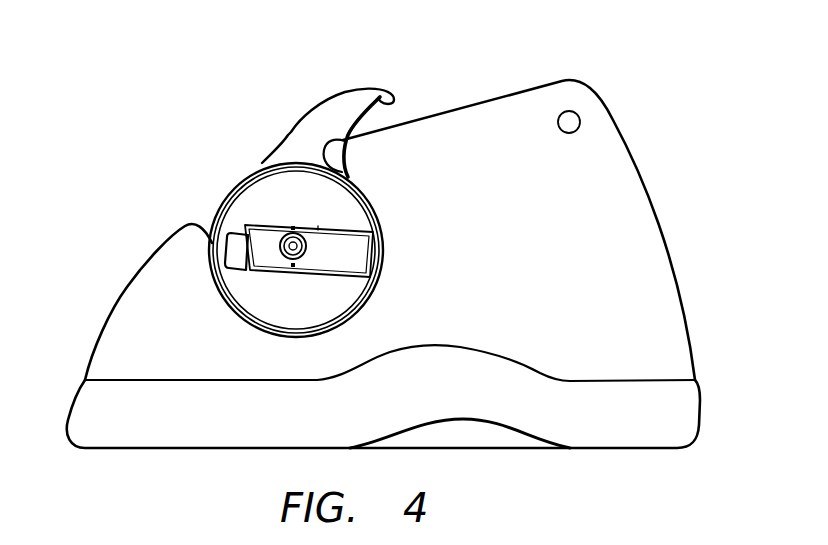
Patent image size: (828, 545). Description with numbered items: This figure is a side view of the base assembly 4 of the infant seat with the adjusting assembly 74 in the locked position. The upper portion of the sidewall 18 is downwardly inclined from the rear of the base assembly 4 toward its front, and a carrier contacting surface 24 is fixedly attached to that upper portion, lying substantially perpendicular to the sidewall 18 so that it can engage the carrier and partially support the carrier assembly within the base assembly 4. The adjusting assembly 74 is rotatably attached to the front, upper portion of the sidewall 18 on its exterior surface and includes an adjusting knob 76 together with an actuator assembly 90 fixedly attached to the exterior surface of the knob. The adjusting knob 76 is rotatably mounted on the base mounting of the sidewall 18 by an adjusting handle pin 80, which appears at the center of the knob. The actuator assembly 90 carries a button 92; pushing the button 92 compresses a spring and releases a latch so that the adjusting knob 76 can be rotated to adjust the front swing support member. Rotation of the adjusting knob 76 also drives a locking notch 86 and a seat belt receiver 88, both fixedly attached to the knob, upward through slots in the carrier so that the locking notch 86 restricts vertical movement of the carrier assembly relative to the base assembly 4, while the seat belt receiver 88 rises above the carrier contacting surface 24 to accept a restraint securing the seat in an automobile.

The base assembly 4 is at (655, 90).
The sidewall 18 is at (650, 208).
The carrier contacting surface 24 is at (533, 86).
The adjusting assembly 74 is at (302, 188).
The adjusting knob 76 is at (222, 210).
The adjusting handle pin 80 is at (287, 255).
The locking notch 86 is at (340, 108).
The seat belt receiver 88 is at (398, 102).
The actuator assembly 90 is at (356, 216).
The button 92 is at (238, 255).